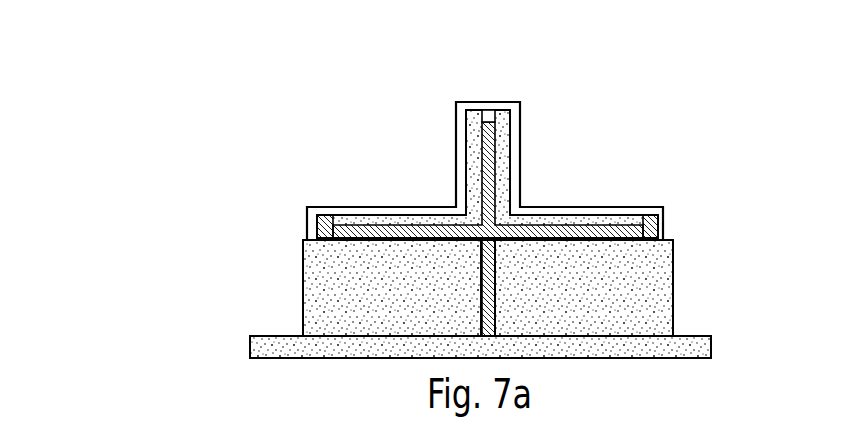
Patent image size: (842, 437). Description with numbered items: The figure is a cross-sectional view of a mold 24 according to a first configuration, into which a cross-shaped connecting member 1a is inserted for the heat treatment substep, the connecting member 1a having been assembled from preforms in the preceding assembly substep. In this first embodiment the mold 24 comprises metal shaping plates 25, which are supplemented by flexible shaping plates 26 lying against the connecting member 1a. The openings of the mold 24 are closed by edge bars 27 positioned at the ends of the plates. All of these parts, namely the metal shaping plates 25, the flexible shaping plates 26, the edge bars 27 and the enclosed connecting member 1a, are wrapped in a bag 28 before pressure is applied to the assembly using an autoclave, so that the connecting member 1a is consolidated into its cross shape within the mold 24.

The mold 24 is at (396, 185).
The metal shaping plates 25 is at (328, 296).
The flexible shaping plates 26 is at (382, 220).
The edge bars 27 is at (486, 114).
The bag 28 is at (505, 103).
The cross-shaped connecting member 1a is at (558, 228).